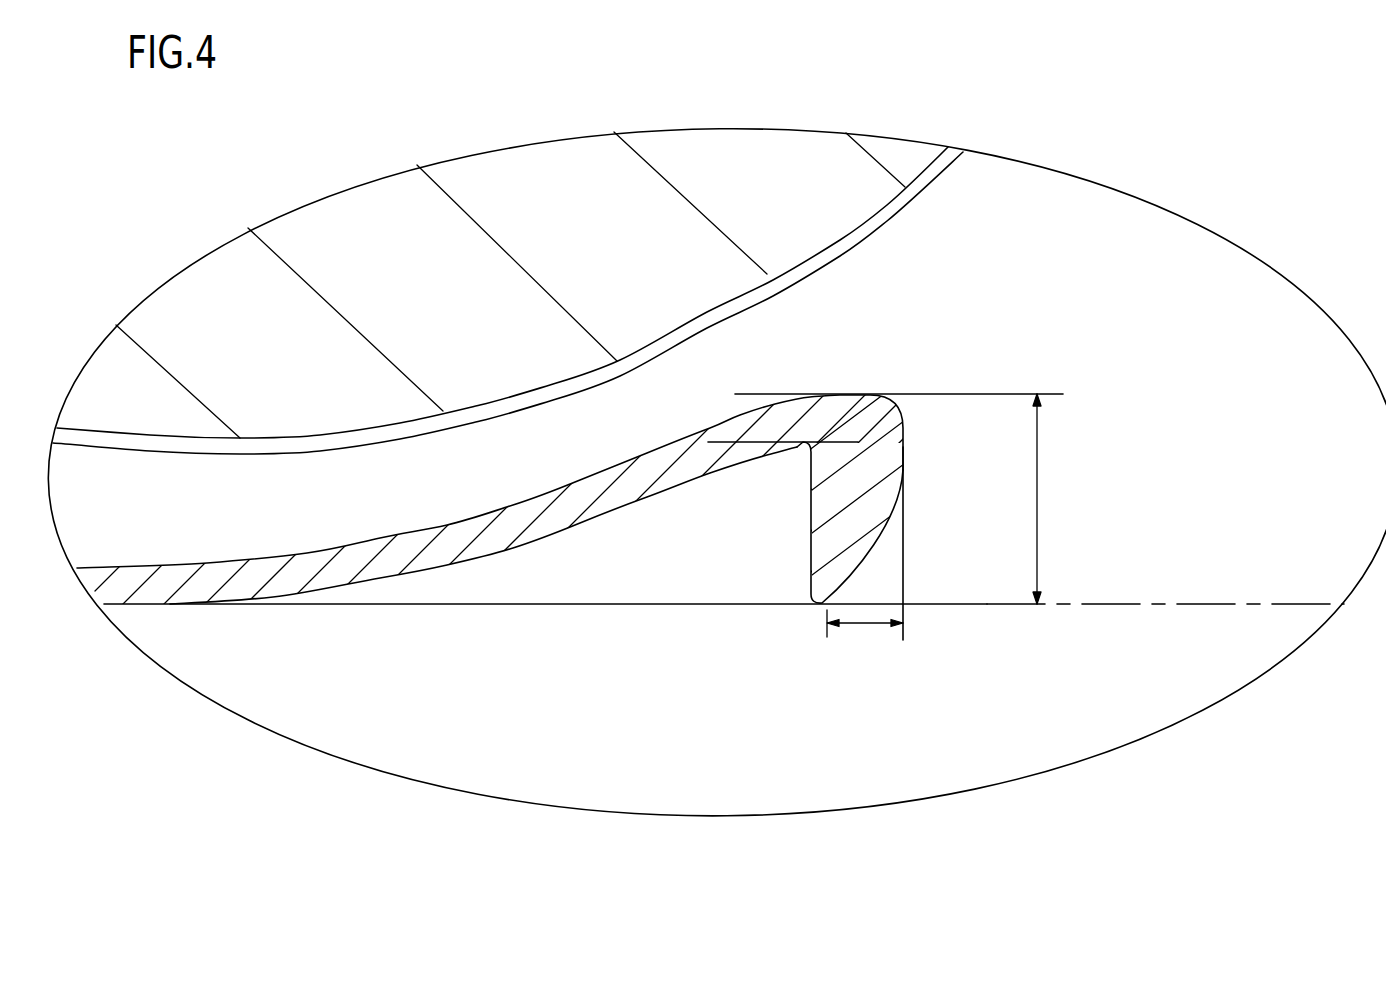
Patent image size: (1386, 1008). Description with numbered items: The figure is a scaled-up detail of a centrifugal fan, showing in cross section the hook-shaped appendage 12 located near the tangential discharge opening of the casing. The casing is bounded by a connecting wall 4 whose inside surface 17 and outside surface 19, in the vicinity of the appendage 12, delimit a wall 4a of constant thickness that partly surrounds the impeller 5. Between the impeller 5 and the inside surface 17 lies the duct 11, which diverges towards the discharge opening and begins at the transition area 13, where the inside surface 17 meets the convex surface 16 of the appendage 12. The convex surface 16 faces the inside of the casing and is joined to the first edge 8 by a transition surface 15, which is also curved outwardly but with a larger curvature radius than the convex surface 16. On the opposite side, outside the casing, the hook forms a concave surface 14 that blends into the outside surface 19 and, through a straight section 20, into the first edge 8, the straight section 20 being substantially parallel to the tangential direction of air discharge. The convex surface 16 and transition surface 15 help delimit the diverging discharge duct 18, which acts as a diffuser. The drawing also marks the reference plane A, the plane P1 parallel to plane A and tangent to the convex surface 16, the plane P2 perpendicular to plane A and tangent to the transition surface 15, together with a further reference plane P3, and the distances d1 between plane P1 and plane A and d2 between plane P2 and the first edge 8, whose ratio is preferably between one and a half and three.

The connecting wall 4 is at (165, 585).
The wall 4a is at (592, 493).
The impeller 5 is at (568, 347).
The first edge 8 is at (823, 606).
The duct 11 is at (418, 497).
The appendage 12 is at (928, 418).
The transition area 13 is at (735, 417).
The concave surface 14 is at (803, 449).
The transition surface 15 is at (868, 548).
The convex surface 16 is at (898, 408).
The inside surface 17 is at (710, 462).
The diverging discharge duct 18 is at (1228, 507).
The outside surface 19 is at (653, 490).
The straight section 20 is at (811, 548).
The plane P1 is at (776, 394).
The plane P2 is at (905, 592).
The third position line P3 is at (882, 395).
The distance d1 is at (1056, 499).
The distance d2 is at (865, 632).
The plane A is at (1143, 603).